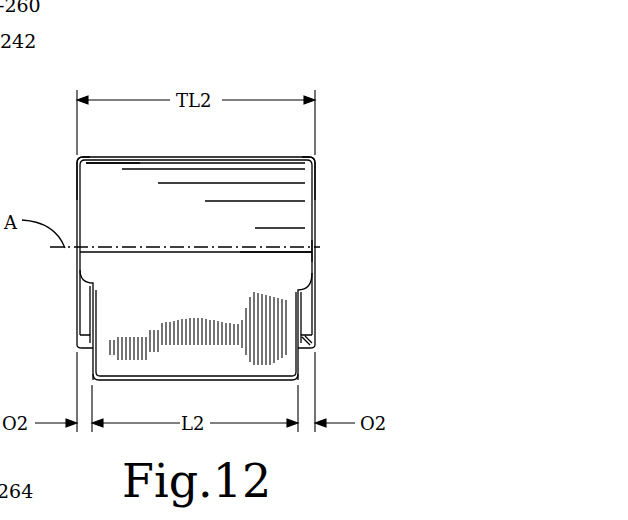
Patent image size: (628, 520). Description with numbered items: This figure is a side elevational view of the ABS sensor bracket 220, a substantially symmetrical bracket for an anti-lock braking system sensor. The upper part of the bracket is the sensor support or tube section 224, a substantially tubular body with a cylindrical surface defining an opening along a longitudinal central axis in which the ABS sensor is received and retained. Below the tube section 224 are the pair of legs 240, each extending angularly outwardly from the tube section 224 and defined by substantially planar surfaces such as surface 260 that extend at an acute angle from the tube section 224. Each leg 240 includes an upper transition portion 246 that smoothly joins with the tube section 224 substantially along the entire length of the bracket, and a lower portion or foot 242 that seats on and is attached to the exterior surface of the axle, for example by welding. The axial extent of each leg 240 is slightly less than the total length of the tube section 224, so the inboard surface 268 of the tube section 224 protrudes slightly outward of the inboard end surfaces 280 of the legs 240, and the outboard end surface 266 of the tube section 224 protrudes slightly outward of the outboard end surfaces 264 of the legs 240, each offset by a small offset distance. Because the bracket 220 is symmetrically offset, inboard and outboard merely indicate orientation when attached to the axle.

The ABS sensor bracket 220 is at (338, 100).
The tube section 224 is at (157, 201).
The legs 240 is at (255, 282).
The foot 242 is at (265, 370).
The upper transition portion 246 is at (300, 256).
The planar surface 260 is at (217, 291).
The outboard end surface of legs 264 is at (300, 316).
The outboard end surface of tube section 266 is at (315, 197).
The inboard surface of tube section 268 is at (77, 197).
The inboard end surface of legs 280 is at (88, 316).